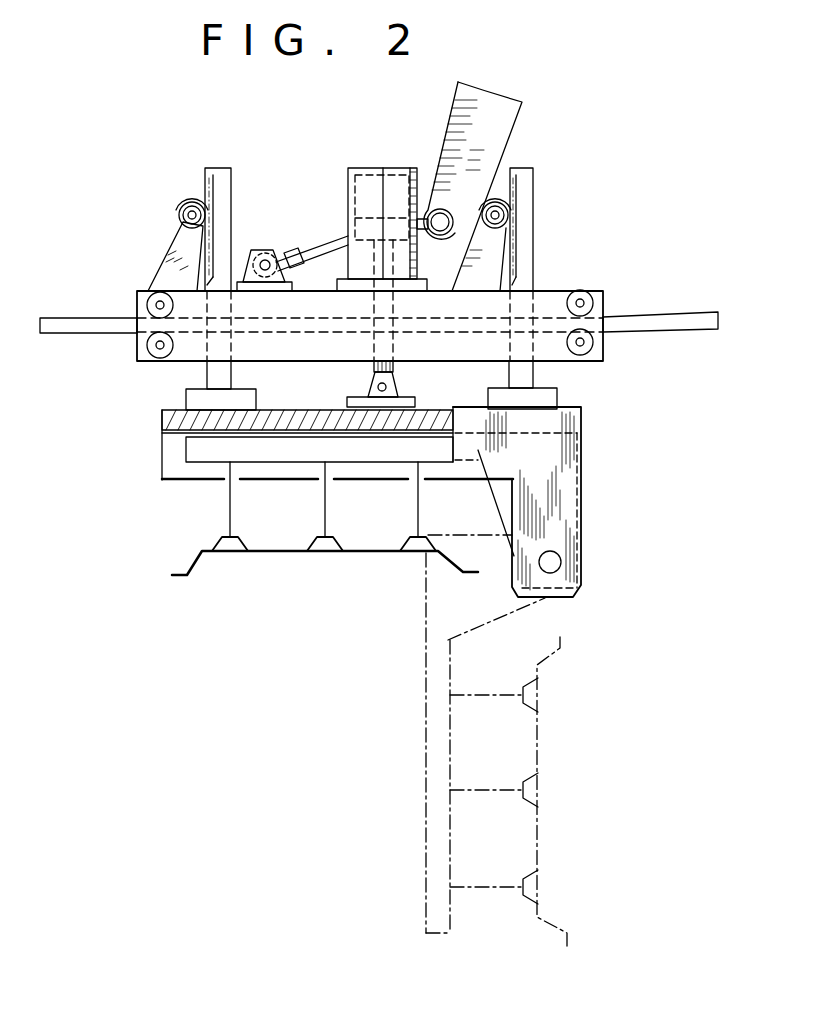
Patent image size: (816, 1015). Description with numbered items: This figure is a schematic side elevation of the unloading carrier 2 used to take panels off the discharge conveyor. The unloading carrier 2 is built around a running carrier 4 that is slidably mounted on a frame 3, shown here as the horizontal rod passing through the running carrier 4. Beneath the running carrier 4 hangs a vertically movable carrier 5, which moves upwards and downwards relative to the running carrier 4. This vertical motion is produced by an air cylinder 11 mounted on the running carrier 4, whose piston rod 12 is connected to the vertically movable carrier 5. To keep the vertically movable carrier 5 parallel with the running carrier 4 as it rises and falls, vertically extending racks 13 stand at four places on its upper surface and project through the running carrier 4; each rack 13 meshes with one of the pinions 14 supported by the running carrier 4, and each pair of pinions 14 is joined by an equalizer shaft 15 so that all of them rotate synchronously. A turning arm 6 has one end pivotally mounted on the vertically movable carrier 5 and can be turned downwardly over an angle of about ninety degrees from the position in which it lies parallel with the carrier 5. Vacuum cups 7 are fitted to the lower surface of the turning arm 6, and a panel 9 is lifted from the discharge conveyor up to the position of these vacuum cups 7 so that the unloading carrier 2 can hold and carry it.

The unloading carrier 2 is at (134, 287).
The frame 3 is at (660, 313).
The running carrier 4 is at (564, 290).
The vertically movable carrier 5 is at (583, 452).
The turning arm 6 is at (186, 452).
The vacuum cups 7 is at (240, 542).
The panel 9 is at (196, 568).
The air cylinder 11 is at (347, 190).
The piston rod 12 is at (394, 367).
The racks 13 is at (204, 180).
The pinions 14 is at (182, 203).
The equalizer shaft 15 is at (189, 215).